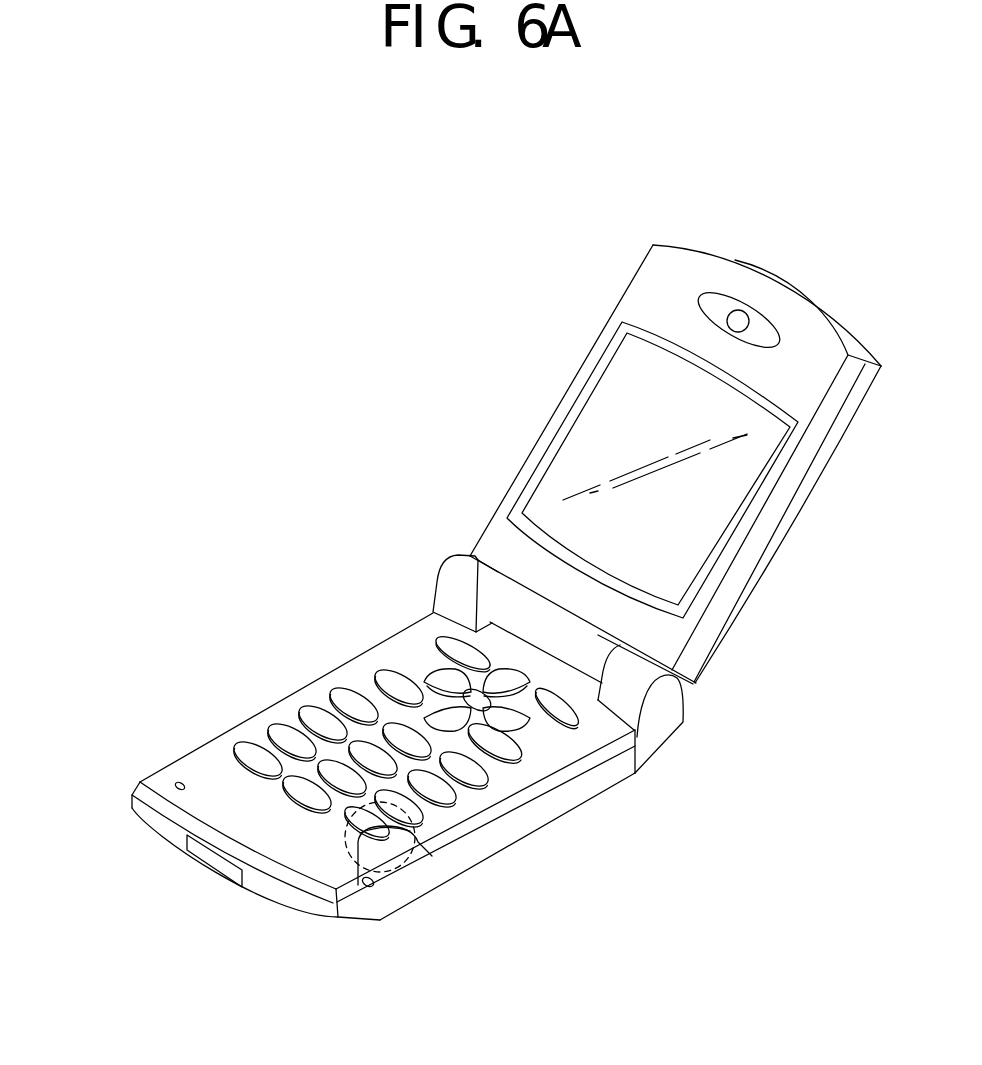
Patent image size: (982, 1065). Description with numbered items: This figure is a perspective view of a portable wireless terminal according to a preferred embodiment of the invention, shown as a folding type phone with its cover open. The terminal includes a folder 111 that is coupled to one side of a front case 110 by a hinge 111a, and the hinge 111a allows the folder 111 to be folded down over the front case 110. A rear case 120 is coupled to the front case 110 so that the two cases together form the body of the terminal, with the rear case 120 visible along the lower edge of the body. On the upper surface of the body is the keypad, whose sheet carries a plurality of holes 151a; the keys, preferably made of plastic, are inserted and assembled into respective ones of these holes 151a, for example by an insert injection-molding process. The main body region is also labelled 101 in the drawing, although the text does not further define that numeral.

The folder 111 is at (786, 491).
The hinge 111a is at (458, 582).
The main body 101 is at (355, 665).
The holes 151a is at (245, 760).
The front case 110 is at (139, 789).
The rear case 120 is at (148, 822).